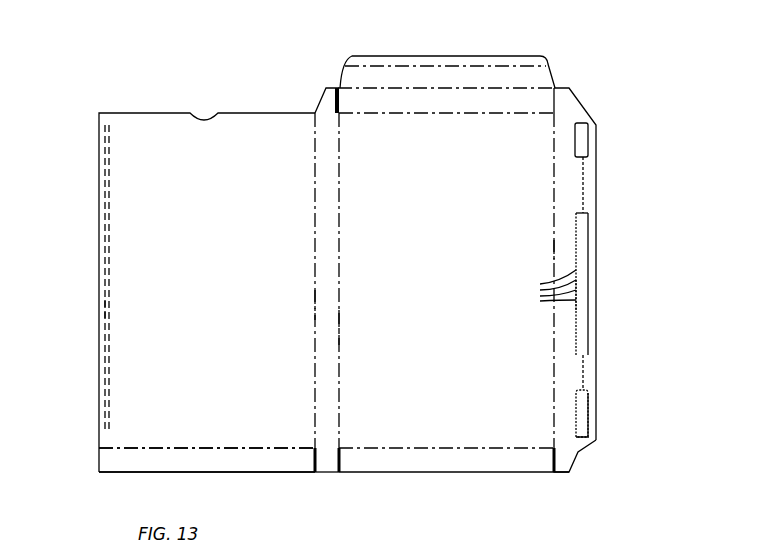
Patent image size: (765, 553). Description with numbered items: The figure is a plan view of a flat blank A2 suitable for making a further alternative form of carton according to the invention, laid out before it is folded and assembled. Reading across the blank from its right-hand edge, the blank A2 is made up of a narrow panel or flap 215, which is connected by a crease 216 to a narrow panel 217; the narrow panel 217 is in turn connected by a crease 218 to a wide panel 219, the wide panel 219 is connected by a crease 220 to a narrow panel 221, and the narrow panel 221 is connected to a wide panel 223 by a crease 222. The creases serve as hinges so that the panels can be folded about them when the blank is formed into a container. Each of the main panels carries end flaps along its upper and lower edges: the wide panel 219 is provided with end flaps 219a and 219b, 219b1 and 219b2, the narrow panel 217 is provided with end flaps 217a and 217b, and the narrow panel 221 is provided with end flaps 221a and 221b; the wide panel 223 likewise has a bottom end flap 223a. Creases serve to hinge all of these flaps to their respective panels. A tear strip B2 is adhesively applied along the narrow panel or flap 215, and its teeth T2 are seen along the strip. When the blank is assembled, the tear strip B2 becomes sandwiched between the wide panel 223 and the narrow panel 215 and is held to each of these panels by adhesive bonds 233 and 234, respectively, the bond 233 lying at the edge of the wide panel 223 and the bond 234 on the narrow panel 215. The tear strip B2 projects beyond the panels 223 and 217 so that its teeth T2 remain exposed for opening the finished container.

The wide panel 223 is at (222, 194).
The adhesive bond 233 is at (107, 308).
The narrow panel 221 is at (320, 267).
The crease 222 is at (313, 305).
The crease 220 is at (340, 332).
The wide panel 219 is at (460, 204).
The end flap 221b is at (326, 100).
The end flap 219b is at (533, 100).
The end flap 219b1 is at (407, 75).
The end flap 219b2 is at (520, 46).
The end flap 217b is at (572, 105).
The end flap 217a is at (578, 462).
The narrow panel or flap 215 is at (590, 140).
The crease 216 is at (573, 188).
The narrow panel 217 is at (560, 213).
The crease 218 is at (555, 245).
The tear strip B2 is at (582, 295).
The teeth T2 is at (545, 288).
The adhesive bond 234 is at (585, 375).
The end flap 223a is at (232, 462).
The end flap 221a is at (329, 462).
The end flap 219a is at (466, 460).
The blank A2 is at (296, 100).